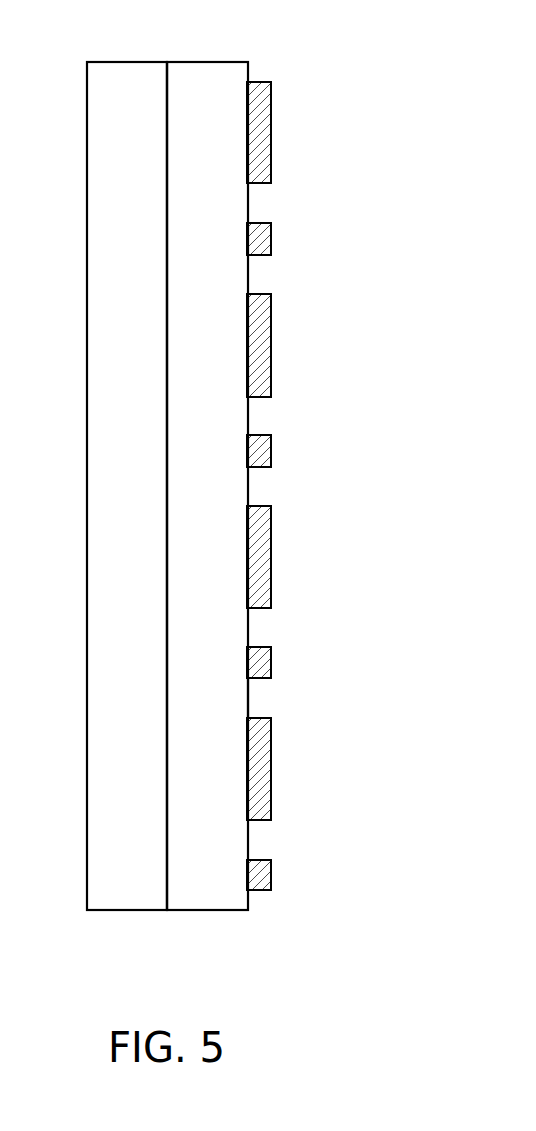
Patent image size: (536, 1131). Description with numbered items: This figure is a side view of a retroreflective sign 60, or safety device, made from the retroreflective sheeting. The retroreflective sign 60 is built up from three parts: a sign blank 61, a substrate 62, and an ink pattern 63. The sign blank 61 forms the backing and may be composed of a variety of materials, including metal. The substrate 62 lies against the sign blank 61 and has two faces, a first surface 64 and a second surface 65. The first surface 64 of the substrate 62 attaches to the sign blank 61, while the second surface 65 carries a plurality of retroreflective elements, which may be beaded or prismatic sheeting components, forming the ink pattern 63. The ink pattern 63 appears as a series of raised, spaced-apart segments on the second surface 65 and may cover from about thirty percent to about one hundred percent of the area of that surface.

The retroreflective sign 60 is at (322, 115).
The sign blank 61 is at (123, 912).
The substrate 62 is at (205, 912).
The ink pattern 63 is at (270, 877).
The first surface 64 is at (167, 710).
The second surface 65 is at (250, 710).